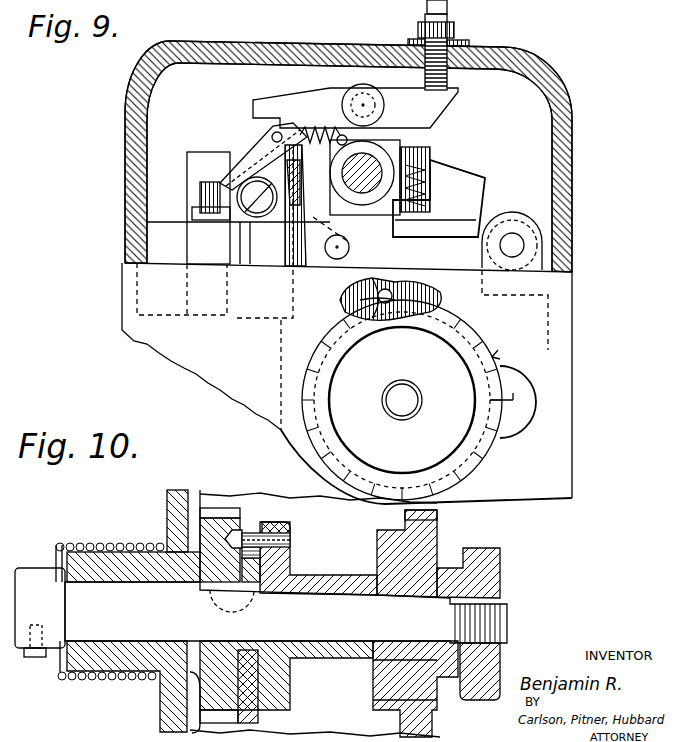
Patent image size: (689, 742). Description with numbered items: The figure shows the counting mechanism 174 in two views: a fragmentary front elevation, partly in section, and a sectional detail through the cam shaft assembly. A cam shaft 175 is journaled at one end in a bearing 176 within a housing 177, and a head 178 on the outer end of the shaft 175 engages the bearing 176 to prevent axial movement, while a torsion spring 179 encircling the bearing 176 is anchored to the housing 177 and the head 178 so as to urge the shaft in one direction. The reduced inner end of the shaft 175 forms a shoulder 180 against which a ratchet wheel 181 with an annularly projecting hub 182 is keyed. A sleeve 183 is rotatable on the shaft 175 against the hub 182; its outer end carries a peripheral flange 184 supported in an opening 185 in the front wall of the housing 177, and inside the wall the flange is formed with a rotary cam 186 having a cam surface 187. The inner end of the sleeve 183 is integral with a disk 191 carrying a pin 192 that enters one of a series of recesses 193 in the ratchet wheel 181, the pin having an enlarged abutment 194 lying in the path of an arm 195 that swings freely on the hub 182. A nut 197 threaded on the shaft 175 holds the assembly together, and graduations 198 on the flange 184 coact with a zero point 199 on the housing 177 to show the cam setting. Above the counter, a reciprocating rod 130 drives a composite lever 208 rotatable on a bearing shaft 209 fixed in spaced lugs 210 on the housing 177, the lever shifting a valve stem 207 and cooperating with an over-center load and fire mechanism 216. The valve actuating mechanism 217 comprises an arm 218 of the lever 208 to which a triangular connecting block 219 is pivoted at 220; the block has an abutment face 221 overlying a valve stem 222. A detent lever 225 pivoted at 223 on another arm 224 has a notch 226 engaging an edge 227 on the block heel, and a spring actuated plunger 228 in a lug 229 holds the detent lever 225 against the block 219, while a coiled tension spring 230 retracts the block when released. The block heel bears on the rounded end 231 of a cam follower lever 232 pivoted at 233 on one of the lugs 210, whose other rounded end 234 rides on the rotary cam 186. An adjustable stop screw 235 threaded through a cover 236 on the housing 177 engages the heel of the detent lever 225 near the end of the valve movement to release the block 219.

In FIG. 9, the rod 130 is at (250, 238).
In FIG. 9, the counting mechanism 174 is at (560, 57).
In FIG. 9, the cam shaft 175 is at (405, 405).
In FIG. 10, the cam shaft 175 is at (353, 605).
In FIG. 10, the bearing 176 is at (128, 565).
In FIG. 9, the housing 177 is at (573, 314).
In FIG. 10, the housing 177 is at (176, 506).
In FIG. 10, the head 178 is at (40, 583).
In FIG. 10, the torsion spring 179 is at (78, 545).
In FIG. 10, the shoulder 180 is at (205, 600).
In FIG. 9, the ratchet wheel 181 is at (462, 297).
In FIG. 10, the ratchet wheel 181 is at (218, 512).
In FIG. 10, the hub 182 is at (255, 647).
In FIG. 10, the sleeve 183 is at (305, 575).
In FIG. 9, the peripheral flange 184 is at (470, 466).
In FIG. 10, the peripheral flange 184 is at (420, 535).
In FIG. 9, the opening 185 is at (492, 357).
In FIG. 10, the opening 185 is at (425, 522).
In FIG. 9, the rotary cam 186 is at (377, 332).
In FIG. 10, the rotary cam 186 is at (386, 690).
In FIG. 9, the cam surface 187 is at (378, 318).
In FIG. 10, the disk 191 is at (272, 680).
In FIG. 10, the pin 192 is at (265, 522).
In FIG. 10, the recesses 193 is at (246, 528).
In FIG. 10, the abutment 194 is at (252, 533).
In FIG. 10, the arm 195 is at (265, 718).
In FIG. 9, the nut 197 is at (312, 352).
In FIG. 10, the nut 197 is at (495, 570).
In FIG. 9, the graduations 198 is at (482, 452).
In FIG. 9, the zero point 199 is at (518, 396).
In FIG. 9, the valve stem 207 is at (200, 160).
In FIG. 9, the composite lever 208 is at (460, 160).
In FIG. 9, the bearing shaft 209 is at (395, 222).
In FIG. 9, the lugs 210 is at (378, 248).
In FIG. 9, the over-center load and fire mechanism 216 is at (513, 204).
In FIG. 9, the valve actuating mechanism 217 is at (246, 124).
In FIG. 9, the arm 218 is at (288, 268).
In FIG. 9, the connecting block 219 is at (242, 130).
In FIG. 9, the pivot 220 is at (192, 215).
In FIG. 9, the abutment face 221 is at (223, 178).
In FIG. 9, the valve stem 222 is at (205, 196).
In FIG. 9, the pivot 223 is at (372, 94).
In FIG. 9, the arm 224 is at (358, 84).
In FIG. 9, the detent lever 225 is at (290, 102).
In FIG. 9, the notch 226 is at (262, 98).
In FIG. 9, the edge 227 is at (280, 235).
In FIG. 9, the spring actuated plunger 228 is at (460, 133).
In FIG. 9, the lug 229 is at (478, 171).
In FIG. 9, the coiled tension spring 230 is at (330, 128).
In FIG. 9, the rounded end 231 is at (283, 146).
In FIG. 9, the cam follower lever 232 is at (298, 266).
In FIG. 9, the pivot 233 is at (336, 259).
In FIG. 9, the rounded end 234 is at (420, 292).
In FIG. 9, the adjustable stop screw 235 is at (455, 52).
In FIG. 9, the cover 236 is at (480, 148).